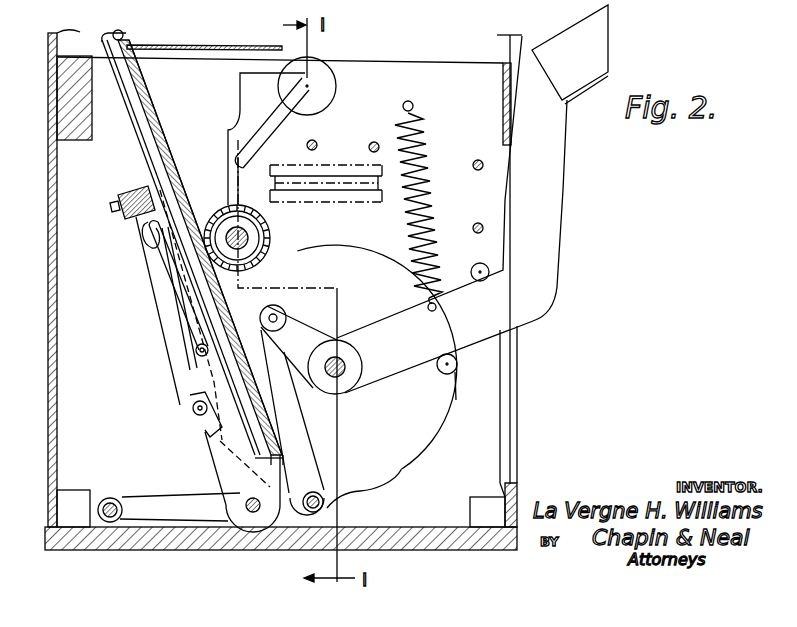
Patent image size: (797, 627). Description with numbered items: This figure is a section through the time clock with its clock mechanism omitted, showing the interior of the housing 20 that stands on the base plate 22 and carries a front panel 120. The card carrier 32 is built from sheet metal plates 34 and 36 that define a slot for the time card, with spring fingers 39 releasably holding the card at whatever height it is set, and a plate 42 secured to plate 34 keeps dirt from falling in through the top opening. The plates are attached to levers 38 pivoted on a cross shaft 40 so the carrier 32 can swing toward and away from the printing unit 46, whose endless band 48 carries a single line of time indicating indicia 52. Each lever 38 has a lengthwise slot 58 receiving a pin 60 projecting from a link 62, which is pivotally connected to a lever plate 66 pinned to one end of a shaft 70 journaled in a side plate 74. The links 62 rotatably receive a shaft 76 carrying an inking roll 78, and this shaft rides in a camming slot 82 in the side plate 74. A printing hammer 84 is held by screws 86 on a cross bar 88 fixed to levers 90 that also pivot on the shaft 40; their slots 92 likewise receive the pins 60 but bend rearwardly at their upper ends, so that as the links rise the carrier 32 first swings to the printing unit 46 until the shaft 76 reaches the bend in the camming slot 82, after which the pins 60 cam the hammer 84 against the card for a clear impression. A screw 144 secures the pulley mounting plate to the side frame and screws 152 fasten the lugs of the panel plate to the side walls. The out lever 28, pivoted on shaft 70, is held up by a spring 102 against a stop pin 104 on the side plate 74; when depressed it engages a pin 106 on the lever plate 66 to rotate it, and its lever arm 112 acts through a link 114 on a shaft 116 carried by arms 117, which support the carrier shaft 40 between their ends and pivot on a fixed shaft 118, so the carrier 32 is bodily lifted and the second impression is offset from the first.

The housing 20 is at (57, 440).
The base plate 22 is at (400, 550).
The out lever 28 is at (563, 263).
The carrier 32 is at (187, 121).
The sheet metal plate 34 is at (158, 107).
The sheet metal plate 36 is at (138, 88).
The lever 38 is at (217, 477).
The spring finger 39 is at (123, 33).
The cross shaft 40 is at (246, 505).
The plate 42 is at (178, 50).
The printing unit 46 is at (342, 137).
The endless band 48 is at (382, 183).
The time indicating indicia 52 is at (345, 180).
The slot 58 is at (172, 275).
The pin 60 is at (197, 340).
The link 62 is at (183, 292).
The lever plate 66 is at (407, 457).
The shaft 70 is at (340, 378).
The side plate 74 is at (474, 450).
The shaft 76 is at (262, 252).
The inking roll 78 is at (262, 226).
The camming slot 82 is at (243, 165).
The printing hammer 84 is at (155, 188).
The screw 86 is at (112, 210).
The cross bar 88 is at (140, 187).
The lever 90 is at (150, 270).
The slot 92 is at (152, 244).
The spring 102 is at (420, 140).
The stop pin 104 is at (481, 263).
The pin 106 is at (442, 370).
The lever arm 112 is at (330, 330).
The link 114 is at (308, 447).
The shaft 116 is at (327, 508).
The arm 117 is at (165, 497).
The fixed shaft 118 is at (110, 498).
The panel 120 is at (518, 483).
The screw 144 is at (369, 151).
The screw 152 is at (478, 160).